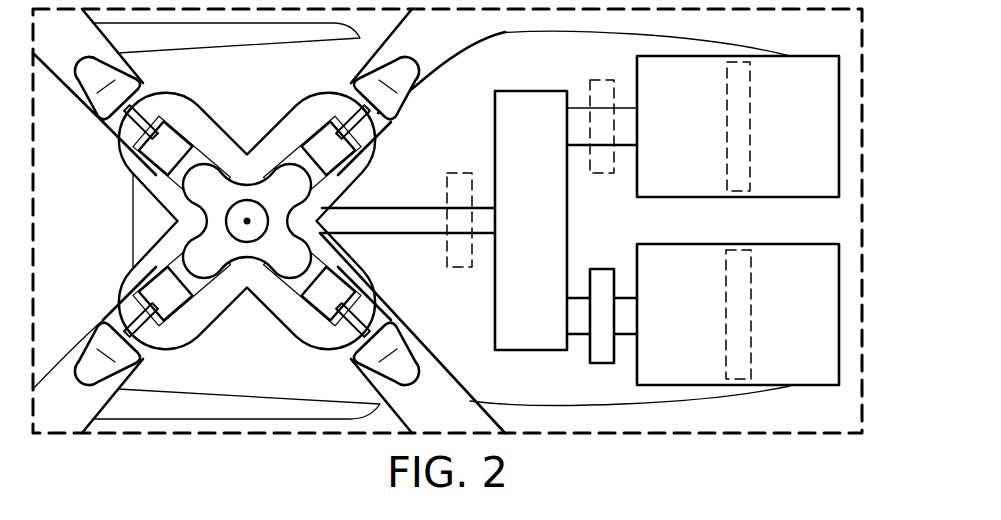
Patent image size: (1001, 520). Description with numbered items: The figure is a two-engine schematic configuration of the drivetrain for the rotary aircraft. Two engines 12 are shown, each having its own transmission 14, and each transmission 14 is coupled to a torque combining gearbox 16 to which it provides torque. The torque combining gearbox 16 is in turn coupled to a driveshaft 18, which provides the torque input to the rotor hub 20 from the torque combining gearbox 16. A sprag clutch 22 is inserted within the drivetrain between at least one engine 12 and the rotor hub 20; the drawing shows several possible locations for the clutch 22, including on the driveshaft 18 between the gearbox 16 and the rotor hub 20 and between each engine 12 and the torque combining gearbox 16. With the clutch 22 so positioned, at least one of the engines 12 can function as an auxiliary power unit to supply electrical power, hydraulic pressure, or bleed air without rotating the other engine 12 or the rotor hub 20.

The engine 12 is at (839, 126).
The transmission 14 is at (751, 117).
The torque combining gearbox 16 is at (495, 126).
The driveshaft 18 is at (413, 208).
The rotor hub 20 is at (232, 206).
The sprag clutch 22 is at (601, 174).